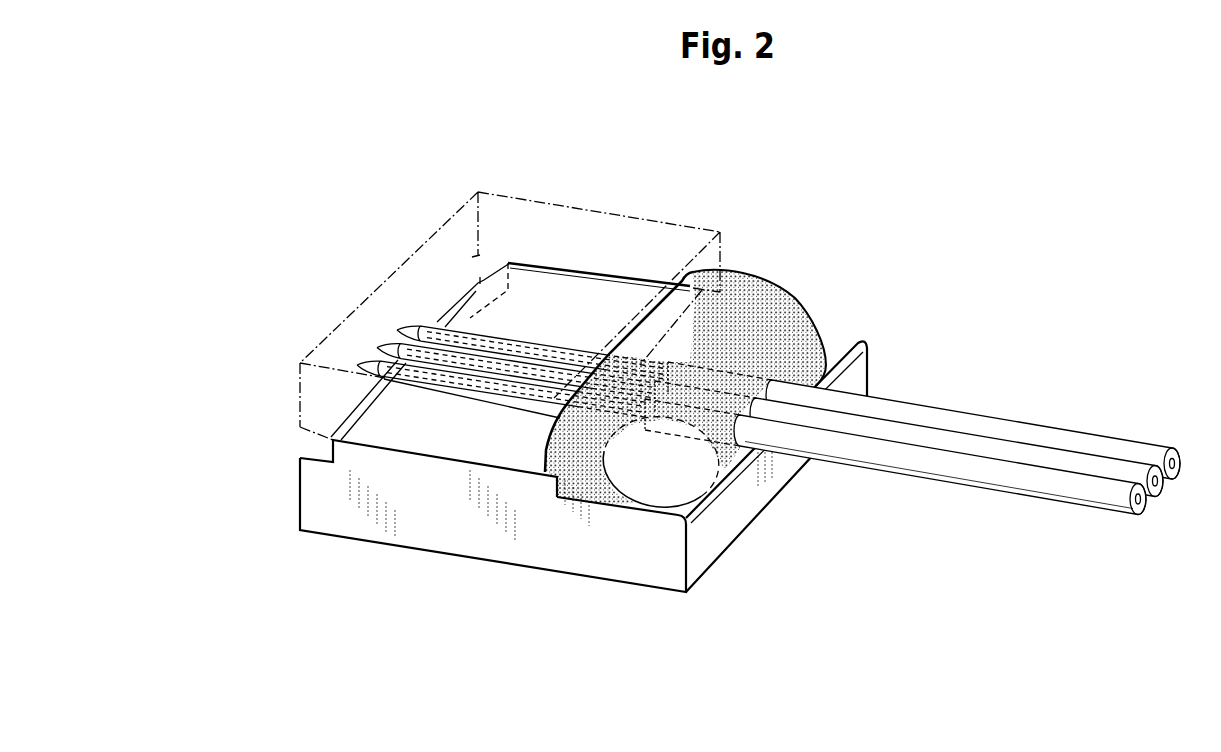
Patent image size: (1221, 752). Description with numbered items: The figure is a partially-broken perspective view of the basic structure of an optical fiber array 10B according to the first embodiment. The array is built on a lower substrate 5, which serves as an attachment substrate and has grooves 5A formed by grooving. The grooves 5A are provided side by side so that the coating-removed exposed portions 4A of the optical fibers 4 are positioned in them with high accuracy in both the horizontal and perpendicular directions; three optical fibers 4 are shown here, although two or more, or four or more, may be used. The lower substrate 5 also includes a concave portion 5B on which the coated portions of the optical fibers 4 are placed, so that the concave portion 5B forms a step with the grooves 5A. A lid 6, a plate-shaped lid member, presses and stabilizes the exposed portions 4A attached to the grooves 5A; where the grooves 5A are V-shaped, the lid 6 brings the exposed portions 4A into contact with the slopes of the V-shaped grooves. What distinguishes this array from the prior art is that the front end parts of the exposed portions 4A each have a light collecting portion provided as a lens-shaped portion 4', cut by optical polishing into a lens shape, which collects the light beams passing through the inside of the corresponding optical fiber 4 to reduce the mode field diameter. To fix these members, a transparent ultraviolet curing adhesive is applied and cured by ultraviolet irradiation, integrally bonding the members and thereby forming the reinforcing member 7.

The optical fiber array 10B is at (893, 227).
The reinforcing member 7 is at (782, 294).
The lens-shaped portions 4' is at (480, 364).
The lid 6 is at (322, 420).
The exposed portions 4A is at (507, 424).
The optical fibers 4 is at (912, 429).
The grooves 5A is at (714, 492).
The lower substrate 5 is at (406, 538).
The concave portion 5B is at (675, 500).